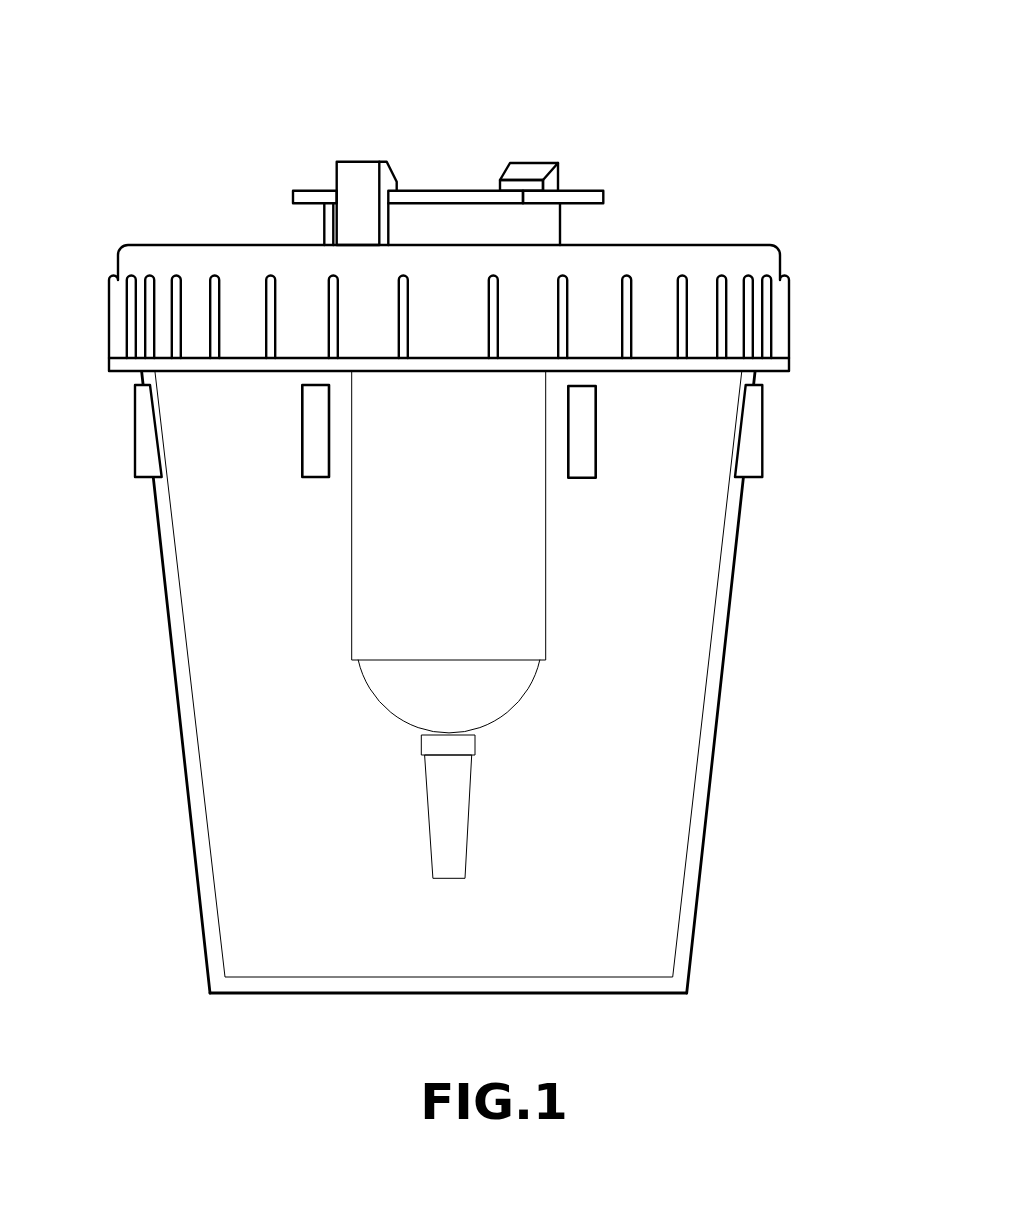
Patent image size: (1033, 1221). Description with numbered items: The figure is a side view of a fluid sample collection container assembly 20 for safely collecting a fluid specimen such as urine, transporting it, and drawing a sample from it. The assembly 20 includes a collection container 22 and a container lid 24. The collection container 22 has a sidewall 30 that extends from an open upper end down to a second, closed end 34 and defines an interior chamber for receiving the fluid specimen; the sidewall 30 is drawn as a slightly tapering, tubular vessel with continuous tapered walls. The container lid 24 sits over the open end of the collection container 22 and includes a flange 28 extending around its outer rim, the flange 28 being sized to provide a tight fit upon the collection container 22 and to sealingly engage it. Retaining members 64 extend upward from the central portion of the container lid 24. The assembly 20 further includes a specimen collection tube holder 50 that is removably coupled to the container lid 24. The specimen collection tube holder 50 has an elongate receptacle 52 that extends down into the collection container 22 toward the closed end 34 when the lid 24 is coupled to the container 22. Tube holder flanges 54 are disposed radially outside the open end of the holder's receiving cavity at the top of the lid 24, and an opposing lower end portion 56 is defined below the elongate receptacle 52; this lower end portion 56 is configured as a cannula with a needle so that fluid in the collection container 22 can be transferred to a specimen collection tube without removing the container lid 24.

The fluid sample collection container assembly 20 is at (760, 126).
The collection container 22 is at (718, 777).
The container lid 24 is at (190, 241).
The flange 28 is at (733, 312).
The sidewall 30 is at (667, 547).
The second, closed end 34 is at (583, 994).
The specimen collection tube holder 50 is at (443, 625).
The elongate receptacle 52 is at (513, 542).
The tube holder flanges 54 is at (583, 198).
The lower end portion 56 is at (465, 833).
The retaining members 64 is at (357, 182).